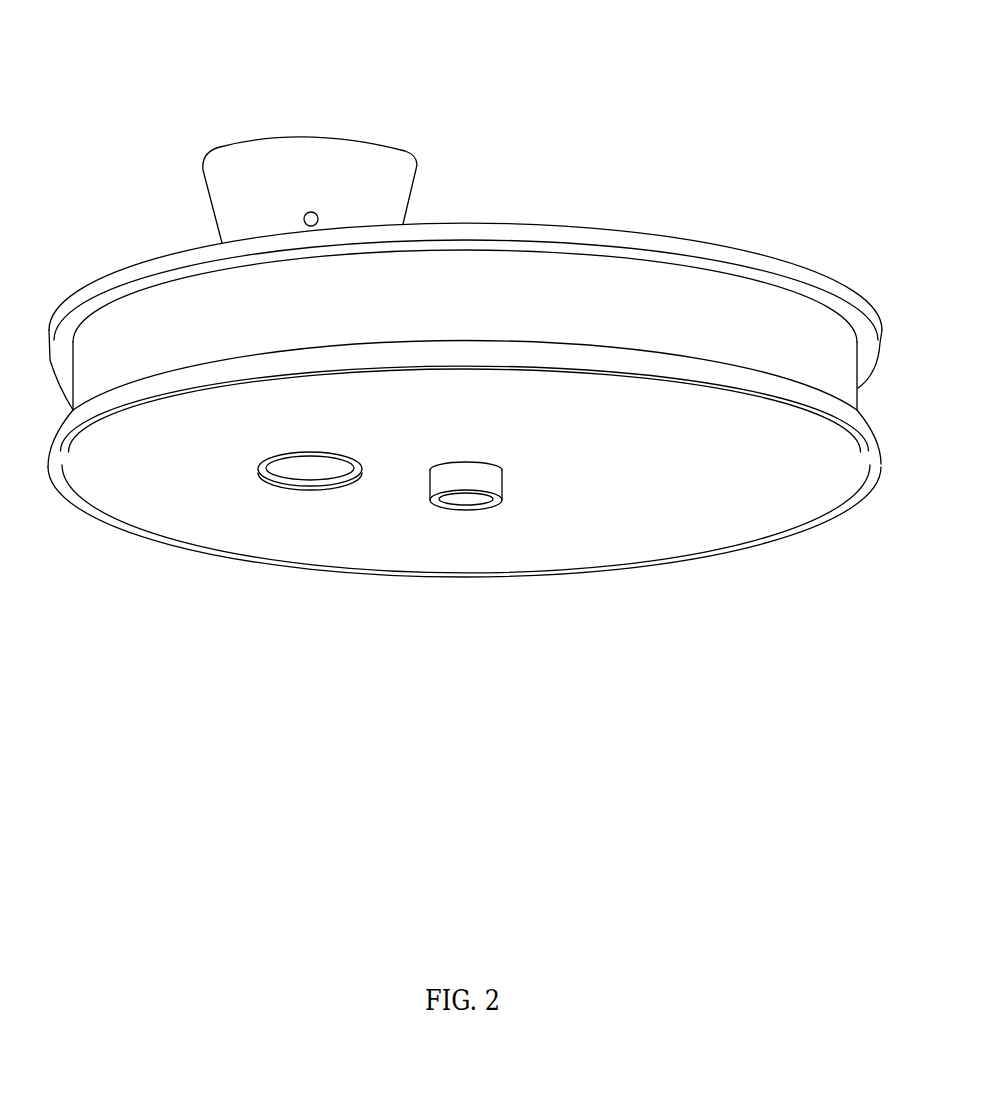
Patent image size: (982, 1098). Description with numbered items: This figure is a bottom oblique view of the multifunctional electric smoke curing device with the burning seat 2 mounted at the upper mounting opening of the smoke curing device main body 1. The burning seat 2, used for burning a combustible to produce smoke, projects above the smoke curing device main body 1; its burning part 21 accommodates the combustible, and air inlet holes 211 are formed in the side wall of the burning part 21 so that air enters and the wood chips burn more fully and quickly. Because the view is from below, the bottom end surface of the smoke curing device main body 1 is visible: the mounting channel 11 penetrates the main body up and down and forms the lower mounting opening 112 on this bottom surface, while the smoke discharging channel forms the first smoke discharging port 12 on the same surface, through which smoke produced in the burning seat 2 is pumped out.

The smoke curing device main body 1 is at (718, 197).
The burning seat 2 is at (325, 125).
The burning part 21 is at (325, 166).
The air inlet hole 211 is at (303, 217).
The mounting channel 11 is at (227, 581).
The lower mounting opening 112 is at (307, 468).
The first smoke discharging port 12 is at (508, 515).